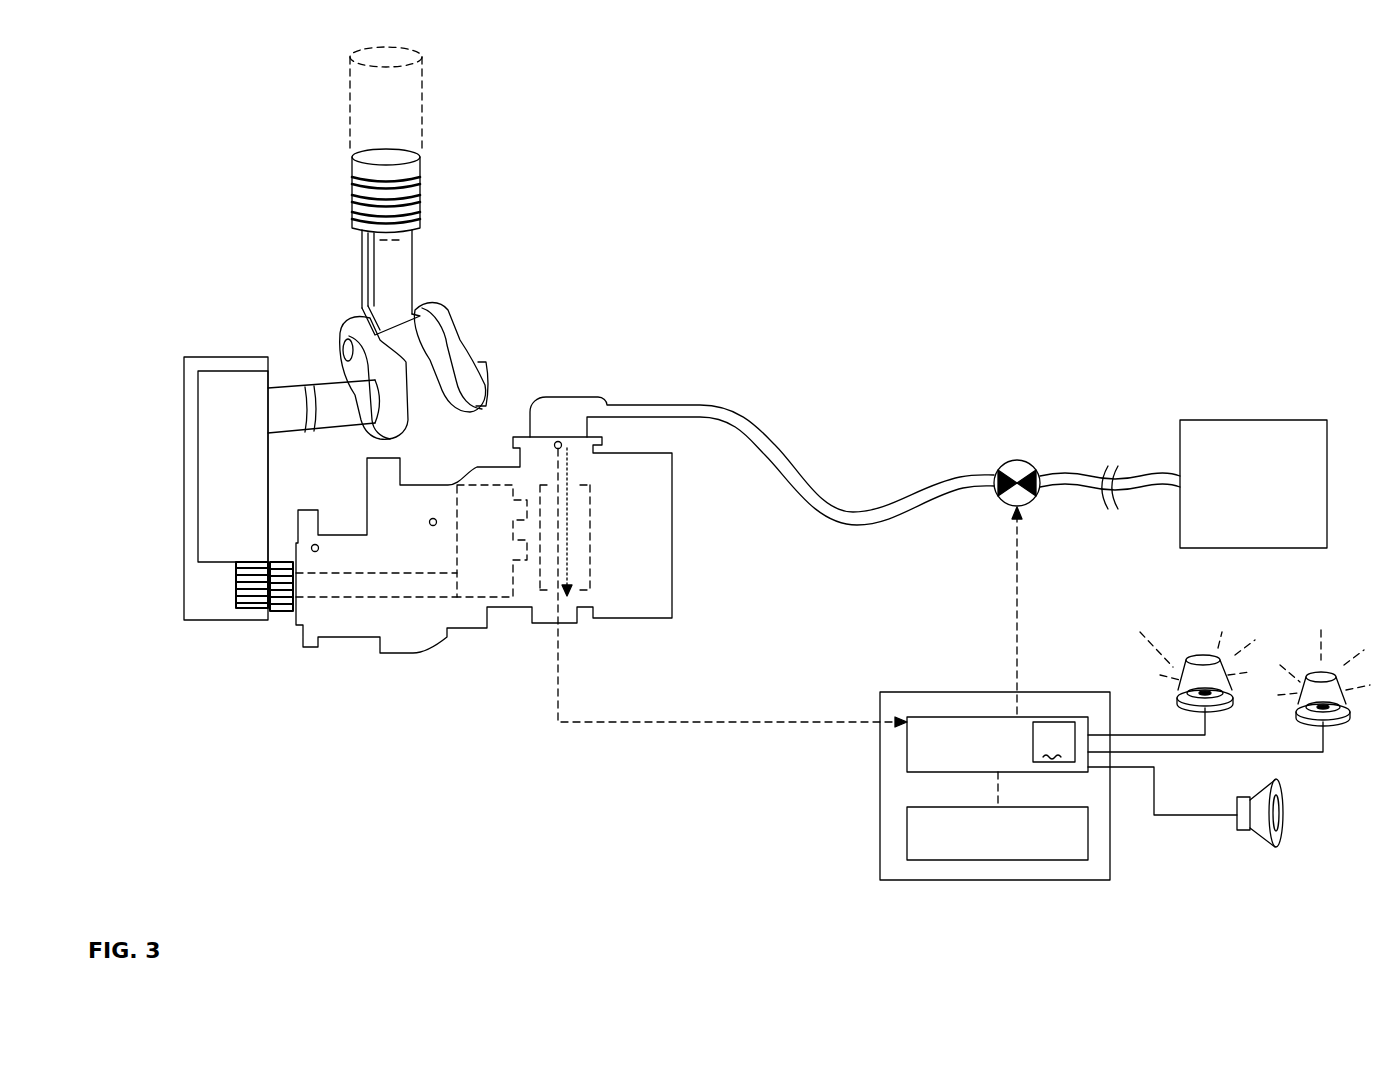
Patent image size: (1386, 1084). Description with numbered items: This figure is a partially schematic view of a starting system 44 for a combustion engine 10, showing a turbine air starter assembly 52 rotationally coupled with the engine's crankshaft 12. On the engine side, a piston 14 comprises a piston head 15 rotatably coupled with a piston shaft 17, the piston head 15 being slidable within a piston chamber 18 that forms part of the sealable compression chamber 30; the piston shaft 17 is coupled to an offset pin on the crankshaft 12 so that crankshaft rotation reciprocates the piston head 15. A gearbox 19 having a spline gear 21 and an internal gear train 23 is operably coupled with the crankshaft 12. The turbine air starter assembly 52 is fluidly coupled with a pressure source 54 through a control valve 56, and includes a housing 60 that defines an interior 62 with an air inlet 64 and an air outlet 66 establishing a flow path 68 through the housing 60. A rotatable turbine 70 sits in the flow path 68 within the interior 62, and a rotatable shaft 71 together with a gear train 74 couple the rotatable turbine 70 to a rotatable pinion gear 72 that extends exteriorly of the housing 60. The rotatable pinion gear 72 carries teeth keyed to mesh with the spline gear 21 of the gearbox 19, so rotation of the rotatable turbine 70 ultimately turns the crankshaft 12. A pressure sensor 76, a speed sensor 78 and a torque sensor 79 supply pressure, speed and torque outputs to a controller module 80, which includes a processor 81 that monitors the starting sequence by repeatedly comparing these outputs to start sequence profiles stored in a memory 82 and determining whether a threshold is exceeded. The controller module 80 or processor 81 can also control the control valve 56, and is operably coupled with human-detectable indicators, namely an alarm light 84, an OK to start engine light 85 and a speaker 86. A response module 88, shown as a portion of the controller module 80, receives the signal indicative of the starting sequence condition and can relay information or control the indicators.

The combustion engine 10 is at (215, 152).
The crankshaft 12 is at (330, 398).
The piston 14 is at (420, 267).
The piston head 15 is at (410, 193).
The piston shaft 17 is at (400, 287).
The piston chamber 18 is at (422, 148).
The gearbox 19 is at (213, 357).
The spline gear 21 is at (250, 615).
The gear train 23 is at (198, 505).
The compression chamber 30 is at (386, 122).
The starting system 44 is at (725, 405).
The turbine air starter assembly 52 is at (622, 628).
The pressure source 54 is at (1218, 420).
The control valve 56 is at (1007, 458).
The housing 60 is at (673, 583).
The interior 62 is at (528, 478).
The air inlet 64 is at (567, 440).
The air outlet 66 is at (572, 622).
The flow path 68 is at (565, 512).
The rotatable turbine 70 is at (545, 622).
The rotatable shaft 71 is at (355, 637).
The rotatable pinion gear 72 is at (296, 555).
The gear train 74 is at (490, 480).
The pressure sensor 76 is at (558, 441).
The speed sensor 78 is at (433, 518).
The torque sensor 79 is at (318, 545).
The controller module 80 is at (970, 880).
The processor 81 is at (977, 717).
The memory 82 is at (907, 838).
The alarm light 84 is at (1223, 663).
The OK to start engine light 85 is at (1298, 683).
The speaker 86 is at (1278, 828).
The response module 88 is at (1054, 742).